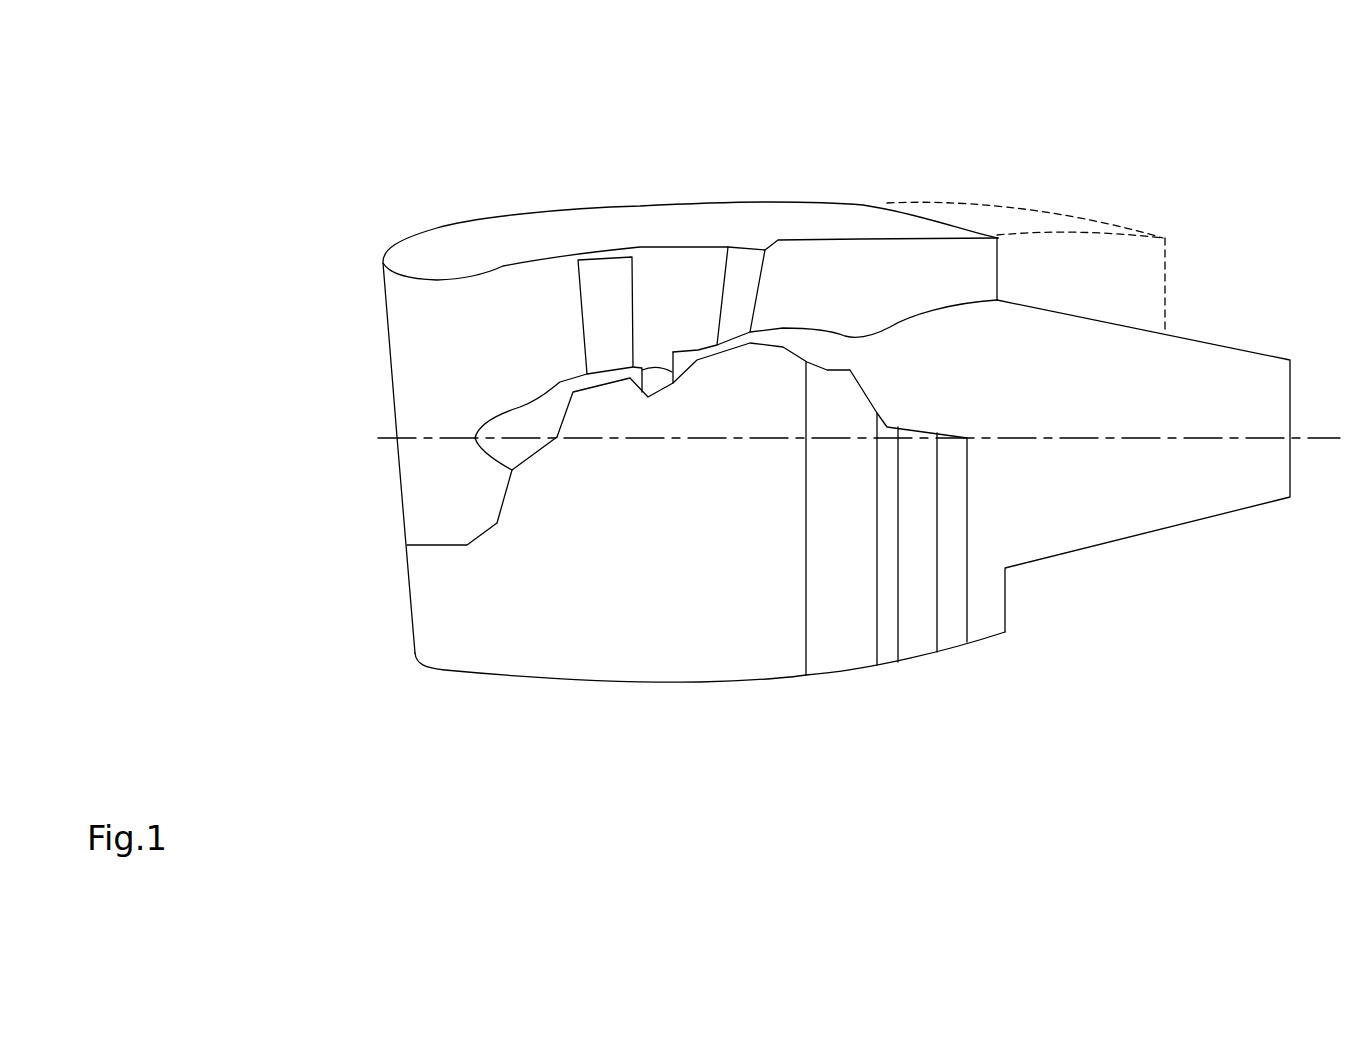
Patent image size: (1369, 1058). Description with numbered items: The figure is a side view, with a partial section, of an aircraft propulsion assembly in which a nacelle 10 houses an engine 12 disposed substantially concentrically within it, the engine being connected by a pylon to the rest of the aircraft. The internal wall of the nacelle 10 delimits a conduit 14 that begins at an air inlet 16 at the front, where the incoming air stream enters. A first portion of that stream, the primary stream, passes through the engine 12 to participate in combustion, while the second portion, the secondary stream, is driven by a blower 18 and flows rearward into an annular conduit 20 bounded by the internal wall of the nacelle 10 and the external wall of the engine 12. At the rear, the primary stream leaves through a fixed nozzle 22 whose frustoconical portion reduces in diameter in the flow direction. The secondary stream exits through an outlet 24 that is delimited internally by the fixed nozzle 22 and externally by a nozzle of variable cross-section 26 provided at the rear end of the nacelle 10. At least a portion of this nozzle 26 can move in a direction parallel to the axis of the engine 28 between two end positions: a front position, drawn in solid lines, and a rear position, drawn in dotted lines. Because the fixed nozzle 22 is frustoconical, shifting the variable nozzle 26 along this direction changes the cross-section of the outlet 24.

The nacelle 10 is at (541, 222).
The engine 12 is at (829, 330).
The conduit 14 is at (447, 333).
The air inlet 16 is at (382, 482).
The blower 18 is at (617, 270).
The annular conduit 20 is at (858, 260).
The fixed nozzle 22 is at (1145, 347).
The outlet 24 is at (1003, 273).
The nozzle of variable cross-section 26 is at (885, 203).
The axis of the engine 28 is at (1237, 438).